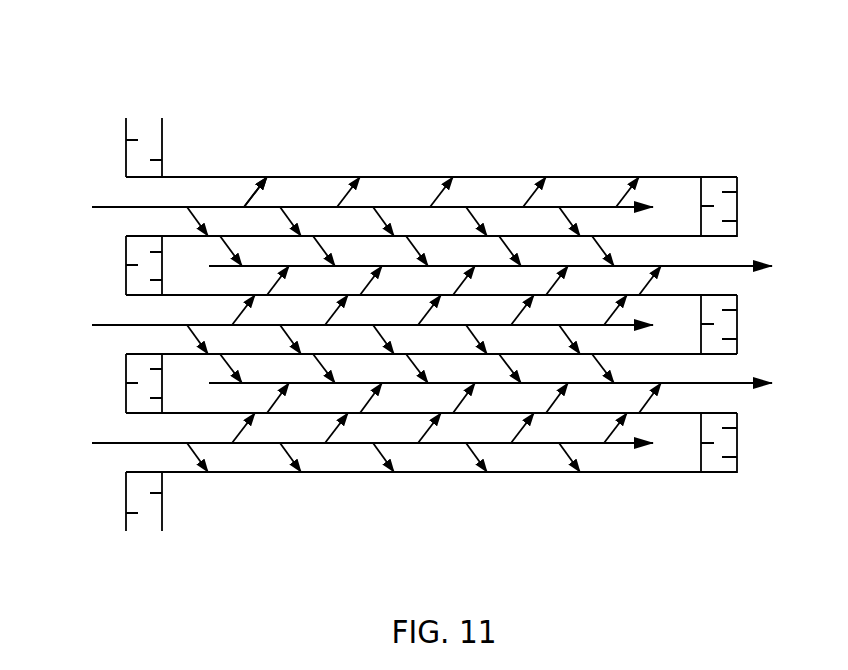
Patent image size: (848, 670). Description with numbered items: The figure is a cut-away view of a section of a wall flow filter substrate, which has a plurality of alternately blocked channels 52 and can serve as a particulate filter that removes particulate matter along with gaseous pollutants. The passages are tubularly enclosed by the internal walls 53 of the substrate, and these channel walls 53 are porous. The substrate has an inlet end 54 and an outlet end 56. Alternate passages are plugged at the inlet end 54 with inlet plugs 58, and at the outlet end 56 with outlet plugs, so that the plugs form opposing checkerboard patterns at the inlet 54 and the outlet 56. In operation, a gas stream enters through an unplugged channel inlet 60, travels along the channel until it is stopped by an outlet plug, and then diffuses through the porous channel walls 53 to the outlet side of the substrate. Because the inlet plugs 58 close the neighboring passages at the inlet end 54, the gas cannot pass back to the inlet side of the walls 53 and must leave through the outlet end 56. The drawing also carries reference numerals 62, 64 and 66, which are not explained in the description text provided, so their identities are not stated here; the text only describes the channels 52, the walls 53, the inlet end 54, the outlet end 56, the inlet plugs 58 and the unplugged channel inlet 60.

The alternately blocked channels 52 is at (183, 247).
The internal walls 53 is at (427, 236).
The inlet end 54 is at (100, 97).
The outlet end 56 is at (775, 154).
The inlet plugs 58 is at (135, 153).
The unplugged channel inlet 60 is at (732, 213).
The flow deflector 62 is at (222, 207).
The first fluid flow 64 is at (151, 200).
The second fluid flow 66 is at (731, 294).